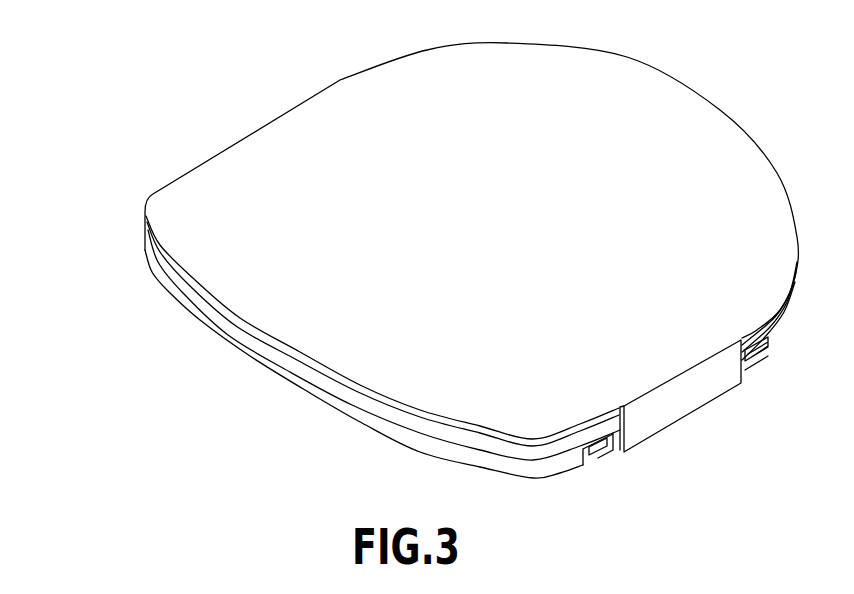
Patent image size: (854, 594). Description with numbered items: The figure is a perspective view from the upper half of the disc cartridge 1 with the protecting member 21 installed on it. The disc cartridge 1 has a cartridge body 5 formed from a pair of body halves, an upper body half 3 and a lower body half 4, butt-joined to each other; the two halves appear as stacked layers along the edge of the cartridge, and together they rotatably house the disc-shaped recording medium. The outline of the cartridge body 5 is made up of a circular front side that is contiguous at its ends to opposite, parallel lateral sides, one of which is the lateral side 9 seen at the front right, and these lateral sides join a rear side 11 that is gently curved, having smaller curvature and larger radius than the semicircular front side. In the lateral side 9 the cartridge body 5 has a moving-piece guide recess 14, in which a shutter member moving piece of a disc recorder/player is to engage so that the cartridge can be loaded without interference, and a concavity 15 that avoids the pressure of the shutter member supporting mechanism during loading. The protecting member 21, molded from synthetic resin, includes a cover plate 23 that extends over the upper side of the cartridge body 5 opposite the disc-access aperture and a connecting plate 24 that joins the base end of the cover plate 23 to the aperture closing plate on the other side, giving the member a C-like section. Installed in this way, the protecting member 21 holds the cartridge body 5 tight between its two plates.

The disc cartridge 1 is at (666, 58).
The upper body half 3 is at (145, 232).
The lower body half 4 is at (155, 260).
The cartridge body 5 is at (82, 208).
The lateral side 9 is at (610, 462).
The rear side 11 is at (362, 423).
The moving-piece guide recess 14 is at (759, 357).
The concavity 15 is at (600, 451).
The protecting member 21 is at (719, 115).
The cover plate 23 is at (443, 64).
The connecting plate 24 is at (690, 385).